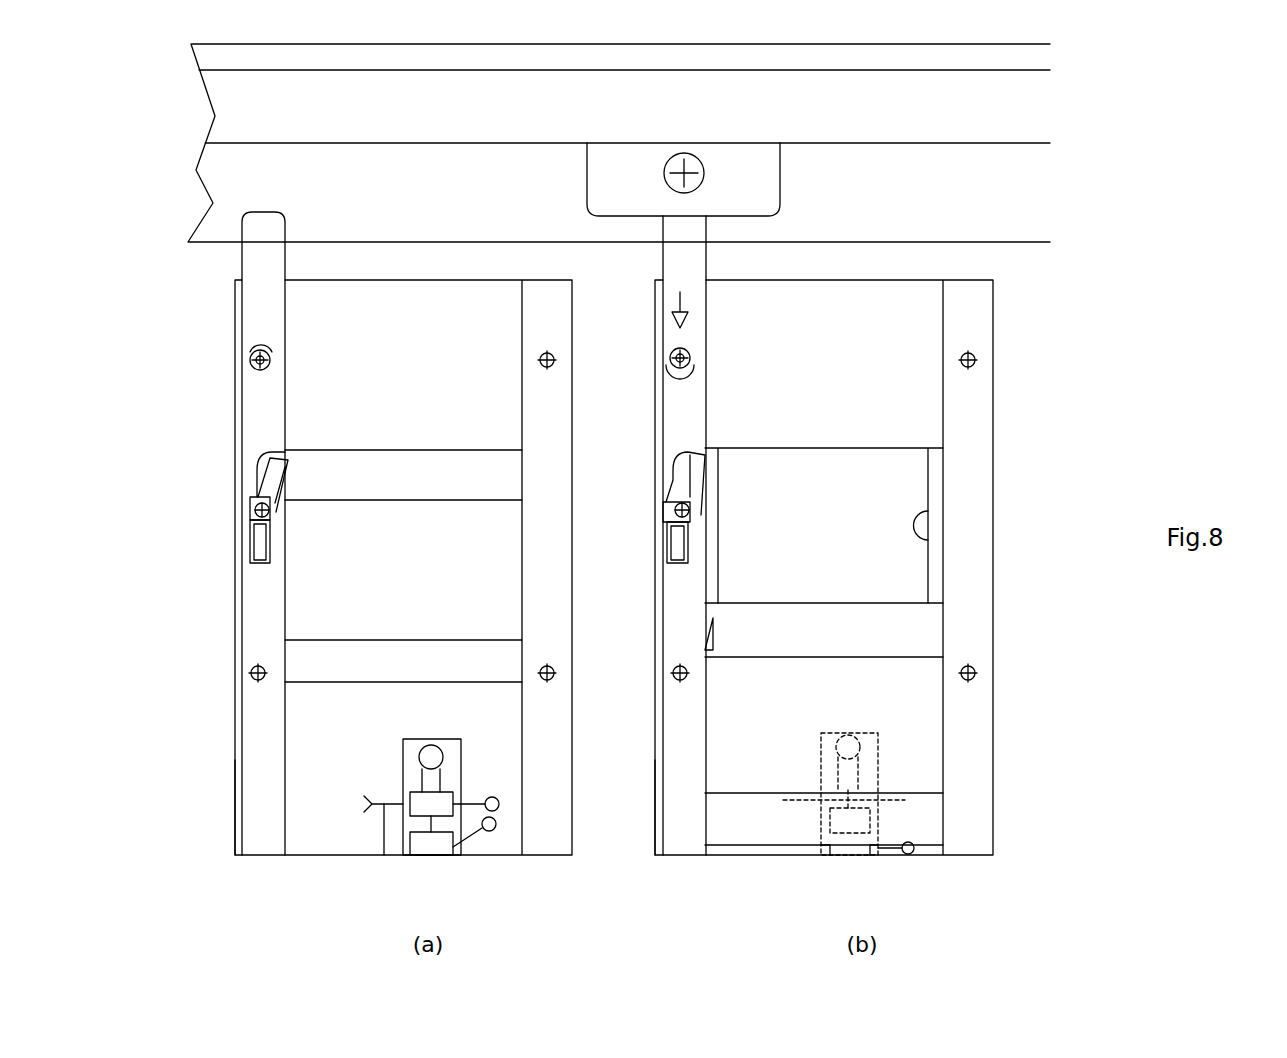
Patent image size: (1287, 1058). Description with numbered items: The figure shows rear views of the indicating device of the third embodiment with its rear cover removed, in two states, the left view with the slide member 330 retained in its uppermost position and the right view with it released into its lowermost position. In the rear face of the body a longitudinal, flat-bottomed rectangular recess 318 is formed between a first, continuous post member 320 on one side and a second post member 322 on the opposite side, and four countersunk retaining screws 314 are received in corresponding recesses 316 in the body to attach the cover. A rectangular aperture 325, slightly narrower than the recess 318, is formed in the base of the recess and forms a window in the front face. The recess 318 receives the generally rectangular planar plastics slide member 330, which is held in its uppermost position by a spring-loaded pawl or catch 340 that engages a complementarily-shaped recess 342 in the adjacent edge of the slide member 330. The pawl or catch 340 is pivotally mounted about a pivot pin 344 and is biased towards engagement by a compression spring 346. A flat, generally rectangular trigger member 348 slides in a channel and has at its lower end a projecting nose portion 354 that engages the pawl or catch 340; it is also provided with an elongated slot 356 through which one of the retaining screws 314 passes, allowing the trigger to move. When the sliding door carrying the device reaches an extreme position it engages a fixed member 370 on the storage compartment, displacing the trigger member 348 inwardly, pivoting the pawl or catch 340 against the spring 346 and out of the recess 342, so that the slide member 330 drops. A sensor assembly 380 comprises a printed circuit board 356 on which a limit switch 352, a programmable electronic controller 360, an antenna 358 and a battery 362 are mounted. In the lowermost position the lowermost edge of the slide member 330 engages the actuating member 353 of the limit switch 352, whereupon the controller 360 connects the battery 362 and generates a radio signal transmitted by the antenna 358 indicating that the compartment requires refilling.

The retaining screws 314 is at (252, 362).
The recesses 316 is at (560, 358).
The longitudinal recess 318 is at (342, 831).
The first post member 320 is at (553, 798).
The frame side wall 322 is at (248, 812).
The rectangular aperture 325 is at (935, 541).
The slide member 330 is at (497, 566).
The pawl or catch 340 is at (278, 472).
The recess 342 is at (712, 620).
The pivot pin 344 is at (255, 512).
The compression spring 346 is at (250, 554).
The trigger member 348 is at (258, 300).
The limit switch 352 is at (845, 856).
The actuating member 353 is at (493, 830).
The projecting nose portion 354 is at (250, 493).
The slot 356 is at (250, 352).
The antenna 358 is at (384, 855).
The programmable electronic controller 360 is at (640, 811).
The battery 362 is at (431, 745).
The fixed member 370 is at (762, 184).
The sensor assembly 380 is at (622, 807).